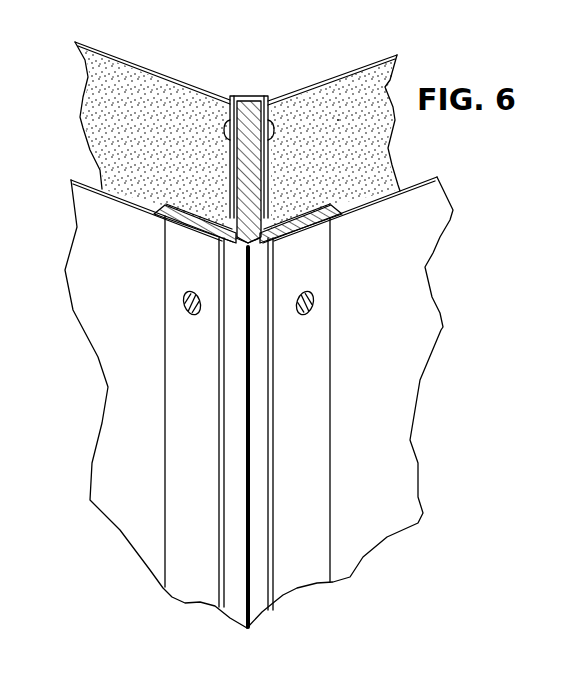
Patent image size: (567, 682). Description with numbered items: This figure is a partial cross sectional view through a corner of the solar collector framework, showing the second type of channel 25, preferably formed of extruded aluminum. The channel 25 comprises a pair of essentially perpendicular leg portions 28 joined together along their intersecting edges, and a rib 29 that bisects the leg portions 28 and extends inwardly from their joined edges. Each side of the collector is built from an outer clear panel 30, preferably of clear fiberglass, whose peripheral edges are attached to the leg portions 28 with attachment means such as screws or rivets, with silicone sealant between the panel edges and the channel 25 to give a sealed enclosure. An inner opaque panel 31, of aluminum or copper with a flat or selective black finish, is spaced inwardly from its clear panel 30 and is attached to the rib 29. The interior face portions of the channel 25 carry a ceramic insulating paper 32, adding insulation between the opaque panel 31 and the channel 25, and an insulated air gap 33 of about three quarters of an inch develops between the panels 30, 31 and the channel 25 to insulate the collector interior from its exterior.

The channel 25 is at (252, 633).
The leg portions 28 is at (203, 222).
The rib 29 is at (247, 118).
The clear panel 30 is at (113, 354).
The opaque panel 31 is at (123, 82).
The ceramic insulating paper 32 is at (205, 220).
The insulated air gap 33 is at (334, 96).